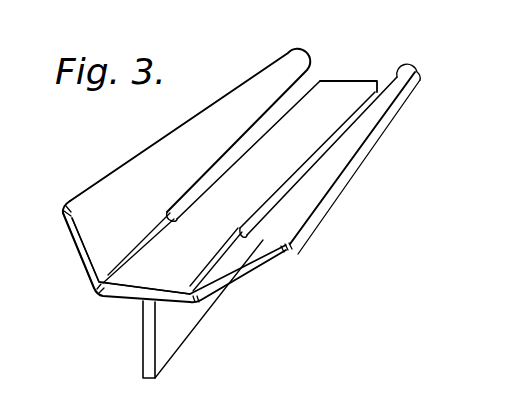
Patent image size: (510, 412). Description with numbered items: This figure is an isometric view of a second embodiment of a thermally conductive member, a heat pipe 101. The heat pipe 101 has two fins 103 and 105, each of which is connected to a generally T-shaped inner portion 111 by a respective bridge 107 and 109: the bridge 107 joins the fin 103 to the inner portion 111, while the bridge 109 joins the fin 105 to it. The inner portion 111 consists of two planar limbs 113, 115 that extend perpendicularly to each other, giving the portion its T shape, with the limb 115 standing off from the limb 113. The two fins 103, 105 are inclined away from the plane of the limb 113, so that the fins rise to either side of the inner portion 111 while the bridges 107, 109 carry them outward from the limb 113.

The heat pipe 101 is at (116, 161).
The fin 103 is at (244, 90).
The fin 105 is at (347, 142).
The bridge 107 is at (118, 263).
The bridge 109 is at (213, 277).
The inner portion 111 is at (347, 81).
The limb 113 is at (335, 97).
The limb 115 is at (147, 319).